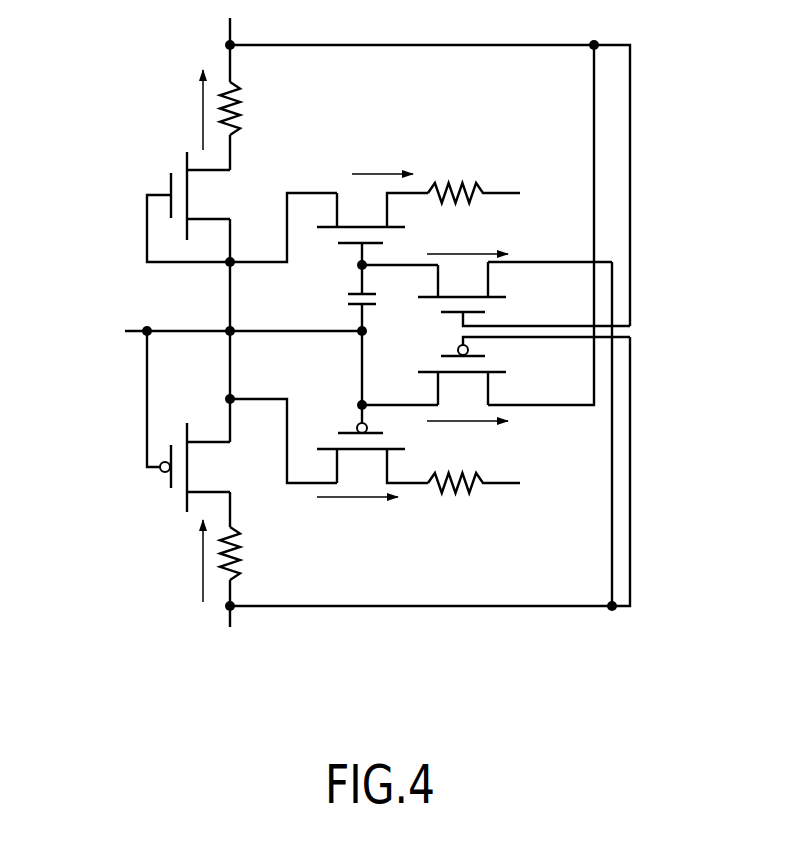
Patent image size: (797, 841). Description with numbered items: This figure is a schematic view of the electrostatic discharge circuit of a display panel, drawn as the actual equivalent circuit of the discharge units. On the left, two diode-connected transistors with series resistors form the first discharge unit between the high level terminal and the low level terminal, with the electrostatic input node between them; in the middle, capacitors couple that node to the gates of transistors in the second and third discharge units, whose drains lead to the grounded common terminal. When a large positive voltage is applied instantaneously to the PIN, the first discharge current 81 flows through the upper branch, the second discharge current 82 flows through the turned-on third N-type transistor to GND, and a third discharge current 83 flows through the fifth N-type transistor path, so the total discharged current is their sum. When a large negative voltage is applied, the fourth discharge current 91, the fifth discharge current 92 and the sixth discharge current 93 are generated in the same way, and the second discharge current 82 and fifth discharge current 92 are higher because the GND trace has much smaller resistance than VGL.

The first discharge current 81 is at (192, 123).
The second discharge current 82 is at (382, 167).
The third discharge current 83 is at (490, 245).
The fourth discharge current 91 is at (192, 577).
The fifth discharge current 92 is at (368, 505).
The sixth discharge current 93 is at (502, 432).